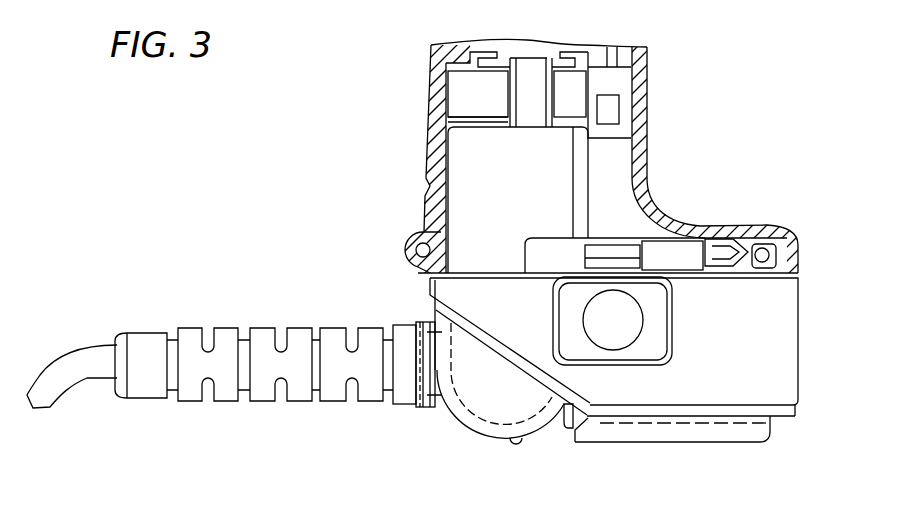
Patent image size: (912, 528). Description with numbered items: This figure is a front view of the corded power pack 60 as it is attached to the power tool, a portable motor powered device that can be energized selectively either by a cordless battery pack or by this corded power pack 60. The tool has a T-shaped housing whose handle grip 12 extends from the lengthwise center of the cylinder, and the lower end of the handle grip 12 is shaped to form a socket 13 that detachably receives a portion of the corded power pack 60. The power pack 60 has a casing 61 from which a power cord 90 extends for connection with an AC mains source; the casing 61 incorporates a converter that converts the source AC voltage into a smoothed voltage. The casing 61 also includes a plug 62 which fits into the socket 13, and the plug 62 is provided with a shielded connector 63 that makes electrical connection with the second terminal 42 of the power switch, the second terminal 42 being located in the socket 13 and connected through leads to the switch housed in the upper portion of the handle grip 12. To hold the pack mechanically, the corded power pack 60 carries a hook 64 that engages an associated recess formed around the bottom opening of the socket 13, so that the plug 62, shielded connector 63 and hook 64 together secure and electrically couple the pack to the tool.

The handle grip 12 is at (426, 108).
The socket 13 is at (638, 222).
The second terminal 42 is at (617, 83).
The corded power pack 60 is at (788, 419).
The casing 61 is at (798, 328).
The plug 62 is at (473, 177).
The shielded connector 63 is at (610, 175).
The hook 64 is at (635, 250).
The power cord 90 is at (73, 347).